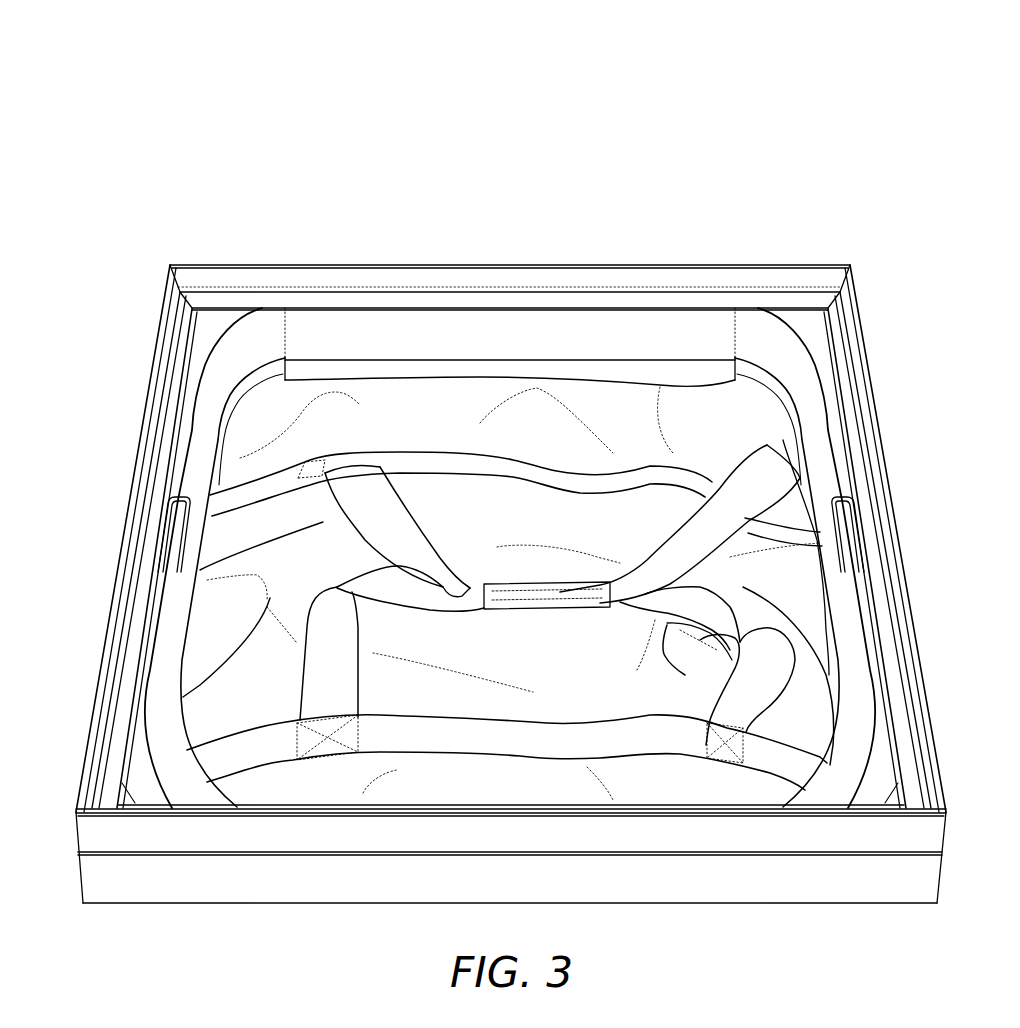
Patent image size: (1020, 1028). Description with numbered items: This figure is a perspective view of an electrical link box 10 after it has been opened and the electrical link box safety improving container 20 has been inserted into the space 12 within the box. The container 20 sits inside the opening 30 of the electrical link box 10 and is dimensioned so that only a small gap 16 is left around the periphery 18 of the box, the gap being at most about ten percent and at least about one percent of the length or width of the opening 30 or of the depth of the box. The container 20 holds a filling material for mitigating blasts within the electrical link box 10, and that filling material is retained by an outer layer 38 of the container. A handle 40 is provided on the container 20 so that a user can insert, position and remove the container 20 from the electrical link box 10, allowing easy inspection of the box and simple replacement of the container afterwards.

The electrical link box 10 is at (752, 120).
The space 12 is at (566, 368).
The gap 16 is at (673, 368).
The periphery 18 is at (188, 392).
The electrical link box safety improving container 20 is at (498, 428).
The opening 30 is at (652, 680).
The outer layer 38 is at (420, 778).
The handle 40 is at (560, 593).